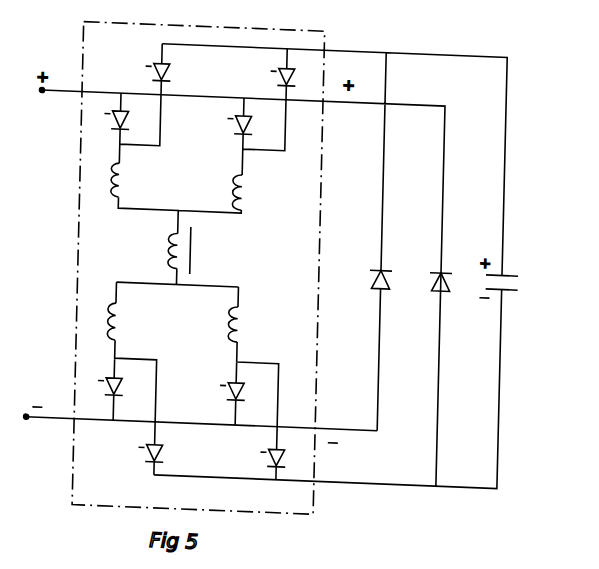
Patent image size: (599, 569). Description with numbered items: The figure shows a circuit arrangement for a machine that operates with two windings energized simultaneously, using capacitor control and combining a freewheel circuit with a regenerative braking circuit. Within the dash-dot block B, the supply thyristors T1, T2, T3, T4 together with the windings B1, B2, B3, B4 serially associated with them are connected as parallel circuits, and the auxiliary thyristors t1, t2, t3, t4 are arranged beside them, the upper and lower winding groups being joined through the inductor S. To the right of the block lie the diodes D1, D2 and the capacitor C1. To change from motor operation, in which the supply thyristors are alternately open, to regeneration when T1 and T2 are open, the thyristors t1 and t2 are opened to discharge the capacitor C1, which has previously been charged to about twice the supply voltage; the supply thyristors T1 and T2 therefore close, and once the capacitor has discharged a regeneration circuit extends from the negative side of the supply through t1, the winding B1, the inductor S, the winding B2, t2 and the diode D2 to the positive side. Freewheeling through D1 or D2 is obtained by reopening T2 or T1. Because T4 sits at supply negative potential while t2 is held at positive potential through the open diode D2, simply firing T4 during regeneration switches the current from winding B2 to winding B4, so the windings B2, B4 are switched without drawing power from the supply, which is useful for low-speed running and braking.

The switching block B is at (85, 58).
The auxiliary thyristor t1 is at (164, 69).
The auxiliary thyristor t2 is at (158, 453).
The auxiliary thyristor t3 is at (290, 72).
The auxiliary thyristor t4 is at (280, 456).
The supply thyristor T1 is at (127, 121).
The supply thyristor T2 is at (120, 387).
The supply thyristor T3 is at (250, 123).
The supply thyristor T4 is at (241, 393).
The winding B1 is at (125, 180).
The winding B2 is at (124, 322).
The winding B3 is at (251, 193).
The winding B4 is at (248, 325).
The common inductor S is at (187, 250).
The freewheel diode D1 is at (370, 271).
The freewheel diode D2 is at (433, 273).
The capacitor C1 is at (511, 276).